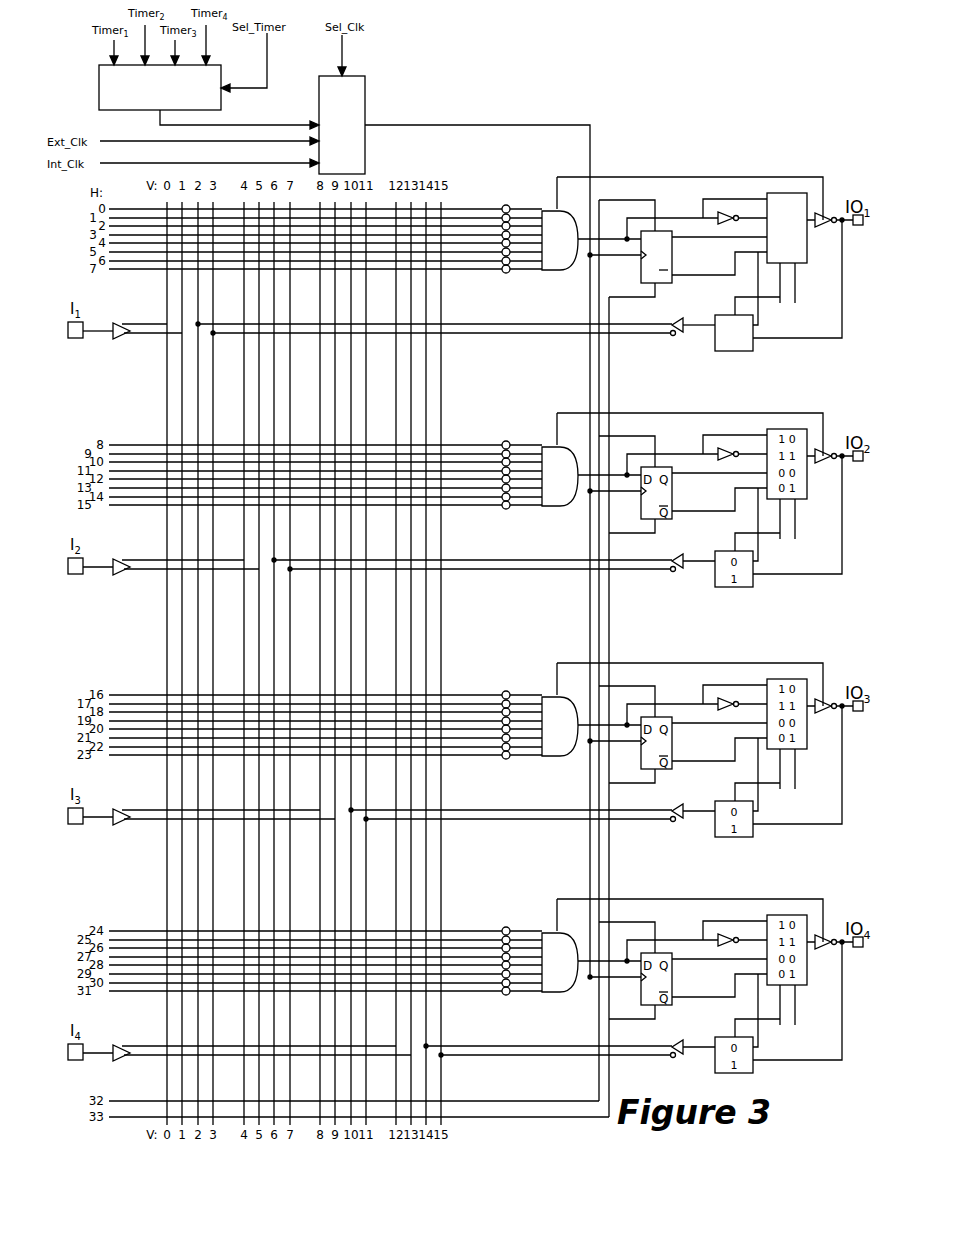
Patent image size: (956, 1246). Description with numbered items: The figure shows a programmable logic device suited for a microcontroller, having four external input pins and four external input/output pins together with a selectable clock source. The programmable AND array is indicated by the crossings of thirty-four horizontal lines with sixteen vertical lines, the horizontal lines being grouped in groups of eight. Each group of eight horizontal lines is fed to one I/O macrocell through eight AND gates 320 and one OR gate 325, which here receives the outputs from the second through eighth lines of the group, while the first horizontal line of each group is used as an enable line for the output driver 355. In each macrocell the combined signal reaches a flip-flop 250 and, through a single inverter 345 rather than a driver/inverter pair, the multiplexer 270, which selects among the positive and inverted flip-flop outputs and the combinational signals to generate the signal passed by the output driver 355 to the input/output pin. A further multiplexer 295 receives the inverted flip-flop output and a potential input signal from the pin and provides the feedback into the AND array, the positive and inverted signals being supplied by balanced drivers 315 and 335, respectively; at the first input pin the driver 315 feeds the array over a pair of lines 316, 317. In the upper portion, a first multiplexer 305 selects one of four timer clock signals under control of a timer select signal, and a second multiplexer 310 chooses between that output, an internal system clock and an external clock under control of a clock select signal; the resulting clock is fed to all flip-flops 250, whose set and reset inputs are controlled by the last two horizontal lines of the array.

The first multiplexer 305 is at (99, 93).
The second multiplexer 310 is at (365, 107).
The balanced driver 315 is at (121, 325).
The first input line 316 is at (166, 322).
The second input line 317 is at (155, 339).
The AND gate 320 is at (503, 195).
The OR gate 325 is at (548, 272).
The flip-flop 250 is at (674, 257).
The inverter 345 is at (723, 211).
The multiplexer 270 is at (781, 193).
The output driver 355 is at (828, 214).
The balanced driver 335 is at (678, 318).
The multiplexer 295 is at (728, 352).